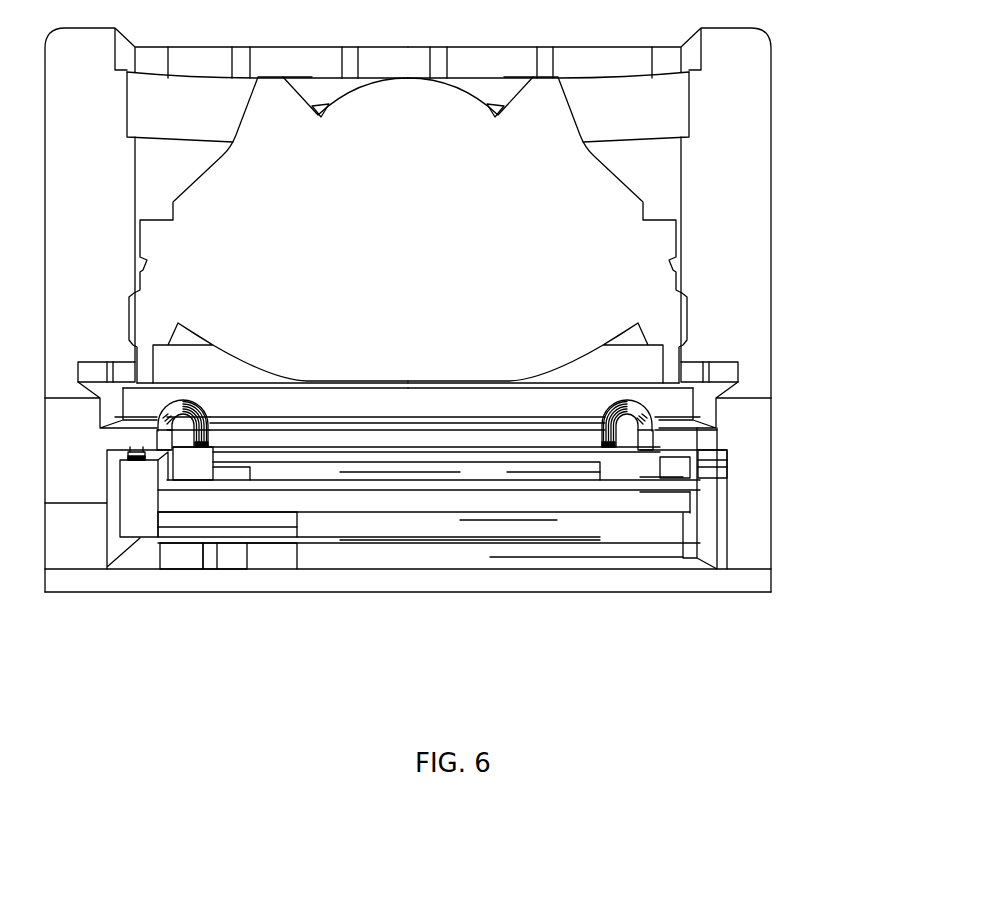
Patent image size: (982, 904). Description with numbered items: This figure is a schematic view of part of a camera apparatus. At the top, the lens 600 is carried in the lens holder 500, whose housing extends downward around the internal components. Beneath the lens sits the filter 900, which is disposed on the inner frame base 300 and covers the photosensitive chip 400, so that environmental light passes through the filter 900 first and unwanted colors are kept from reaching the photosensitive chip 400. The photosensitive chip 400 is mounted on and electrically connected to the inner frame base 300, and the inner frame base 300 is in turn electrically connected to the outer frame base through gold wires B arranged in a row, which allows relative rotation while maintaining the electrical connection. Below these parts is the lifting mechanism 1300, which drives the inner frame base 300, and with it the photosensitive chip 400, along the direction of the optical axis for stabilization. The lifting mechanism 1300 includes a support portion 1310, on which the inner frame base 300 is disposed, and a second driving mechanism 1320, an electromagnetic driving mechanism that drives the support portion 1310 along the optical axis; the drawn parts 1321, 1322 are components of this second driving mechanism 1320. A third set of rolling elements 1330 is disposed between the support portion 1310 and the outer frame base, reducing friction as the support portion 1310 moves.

The lens holder 500 is at (728, 70).
The lens 600 is at (540, 123).
The gold wires B is at (645, 407).
The filter 900 is at (503, 438).
The inner frame base 300 is at (618, 467).
The photosensitive chip 400 is at (365, 477).
The lifting mechanism 1300 is at (372, 574).
The third set of rolling elements 1330 is at (117, 483).
The support portion 1310 is at (137, 520).
The second driving mechanism 1320 is at (429, 590).
The first magnet 1321 is at (253, 518).
The second magnet 1322 is at (260, 639).